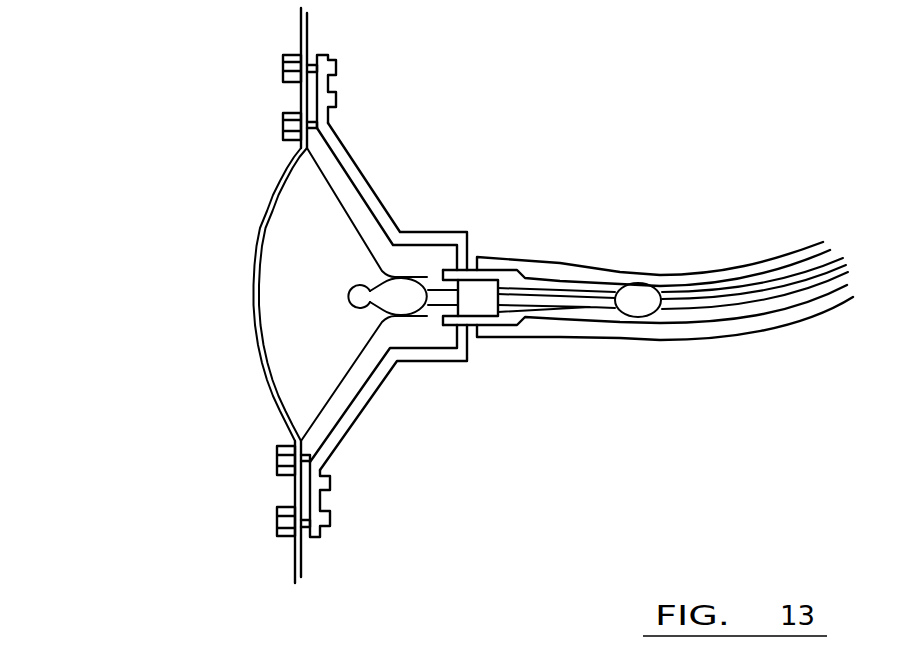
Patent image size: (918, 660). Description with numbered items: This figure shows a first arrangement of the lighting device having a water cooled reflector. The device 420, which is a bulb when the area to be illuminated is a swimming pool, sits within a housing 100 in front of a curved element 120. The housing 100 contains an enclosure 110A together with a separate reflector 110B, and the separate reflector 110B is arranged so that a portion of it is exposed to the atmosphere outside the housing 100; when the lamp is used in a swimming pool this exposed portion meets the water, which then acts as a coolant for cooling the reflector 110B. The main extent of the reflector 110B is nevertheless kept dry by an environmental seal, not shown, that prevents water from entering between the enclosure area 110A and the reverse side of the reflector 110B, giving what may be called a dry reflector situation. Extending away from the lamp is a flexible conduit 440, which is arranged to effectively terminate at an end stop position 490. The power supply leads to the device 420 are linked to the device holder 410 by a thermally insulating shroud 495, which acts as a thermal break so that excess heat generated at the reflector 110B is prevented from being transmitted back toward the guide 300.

The housing 100 is at (240, 318).
The enclosure 110A is at (365, 188).
The separate reflector 110B is at (330, 187).
The reflector 120 is at (262, 375).
The guide 300 is at (533, 258).
The device holder 410 is at (417, 277).
The device 420 is at (348, 295).
The flexible conduit 440 is at (575, 298).
The end stop position 490 is at (483, 305).
The thermally insulating shroud 495 is at (433, 287).